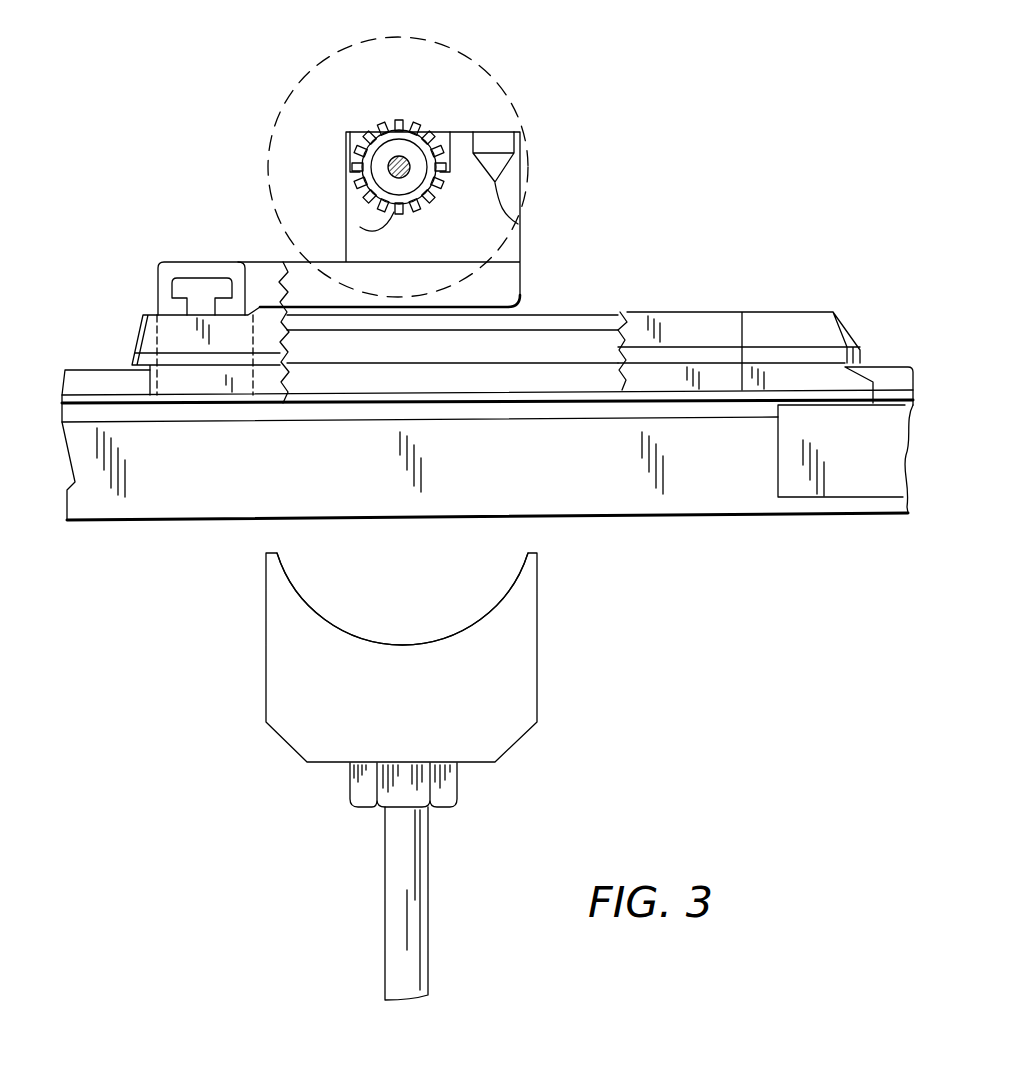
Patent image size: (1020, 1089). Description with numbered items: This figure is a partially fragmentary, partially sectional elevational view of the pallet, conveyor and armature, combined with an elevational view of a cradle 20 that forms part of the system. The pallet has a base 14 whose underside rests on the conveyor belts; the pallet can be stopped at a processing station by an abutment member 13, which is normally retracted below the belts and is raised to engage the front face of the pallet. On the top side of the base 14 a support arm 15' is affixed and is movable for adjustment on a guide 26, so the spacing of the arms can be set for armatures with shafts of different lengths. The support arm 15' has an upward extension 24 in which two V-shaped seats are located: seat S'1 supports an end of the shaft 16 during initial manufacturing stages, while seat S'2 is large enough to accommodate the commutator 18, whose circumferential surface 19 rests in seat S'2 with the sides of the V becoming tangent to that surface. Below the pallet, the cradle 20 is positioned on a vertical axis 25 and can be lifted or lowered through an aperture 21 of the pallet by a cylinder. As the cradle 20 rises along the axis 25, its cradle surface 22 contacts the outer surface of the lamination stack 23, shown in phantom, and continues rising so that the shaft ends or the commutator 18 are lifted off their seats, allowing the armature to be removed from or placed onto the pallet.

The abutment member 13 is at (862, 407).
The base 14 is at (673, 328).
The support arm 15' is at (410, 219).
The shaft 16 is at (404, 160).
The commutator 18 is at (428, 187).
The commutator circumferential surface 19 is at (378, 99).
The cradle 20 is at (527, 702).
The aperture 21 is at (588, 330).
The cradle surface 22 is at (466, 626).
The lamination stack 23 is at (527, 112).
The upward extension 24 is at (513, 187).
The vertical axis 25 is at (413, 895).
The guide 26 is at (204, 284).
The seat S'1 is at (536, 214).
The seat S'2 is at (347, 230).